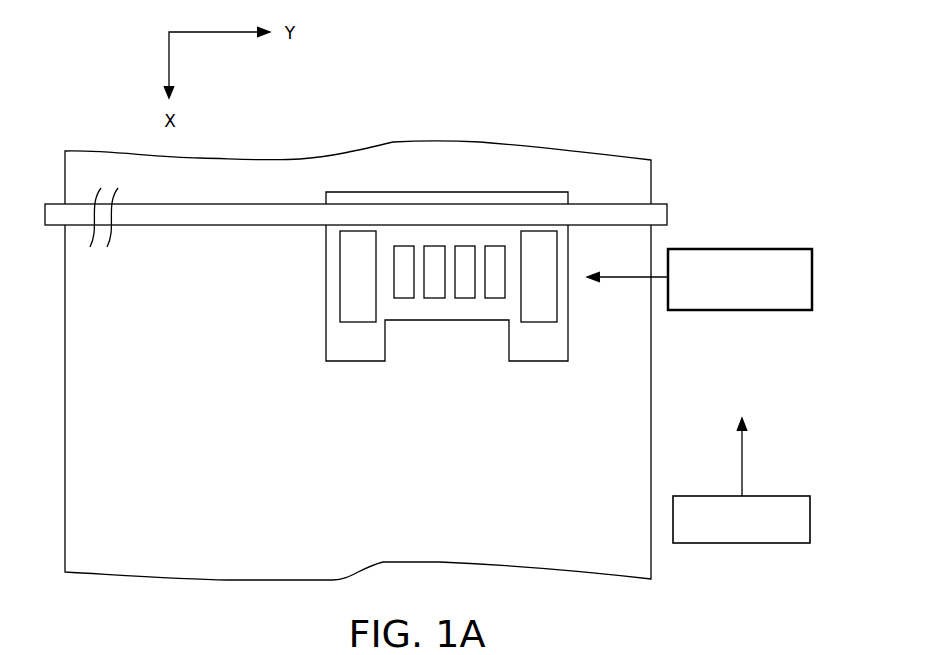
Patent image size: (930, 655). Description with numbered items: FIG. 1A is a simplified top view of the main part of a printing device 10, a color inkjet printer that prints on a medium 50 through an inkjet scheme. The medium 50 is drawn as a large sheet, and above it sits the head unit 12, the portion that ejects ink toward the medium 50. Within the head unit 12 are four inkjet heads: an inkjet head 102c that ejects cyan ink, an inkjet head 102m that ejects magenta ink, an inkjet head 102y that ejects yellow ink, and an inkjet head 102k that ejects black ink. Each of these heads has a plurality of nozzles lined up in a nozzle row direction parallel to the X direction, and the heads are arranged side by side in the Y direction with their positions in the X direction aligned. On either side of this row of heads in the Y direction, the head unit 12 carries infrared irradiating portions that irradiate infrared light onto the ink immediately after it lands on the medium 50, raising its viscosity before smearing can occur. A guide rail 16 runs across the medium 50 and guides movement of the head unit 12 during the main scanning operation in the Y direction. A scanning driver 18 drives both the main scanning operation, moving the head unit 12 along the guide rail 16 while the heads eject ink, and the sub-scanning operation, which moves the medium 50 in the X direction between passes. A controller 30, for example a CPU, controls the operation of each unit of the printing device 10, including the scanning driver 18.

The printing device 10 is at (708, 122).
The head unit 12 is at (353, 353).
The guide rail 16 is at (175, 220).
The scanning driver 18 is at (737, 249).
The controller 30 is at (805, 496).
The medium 50 is at (218, 563).
The inkjet head 102c is at (408, 246).
The inkjet head 102m is at (437, 246).
The inkjet head 102y is at (467, 246).
The inkjet head 102k is at (507, 246).